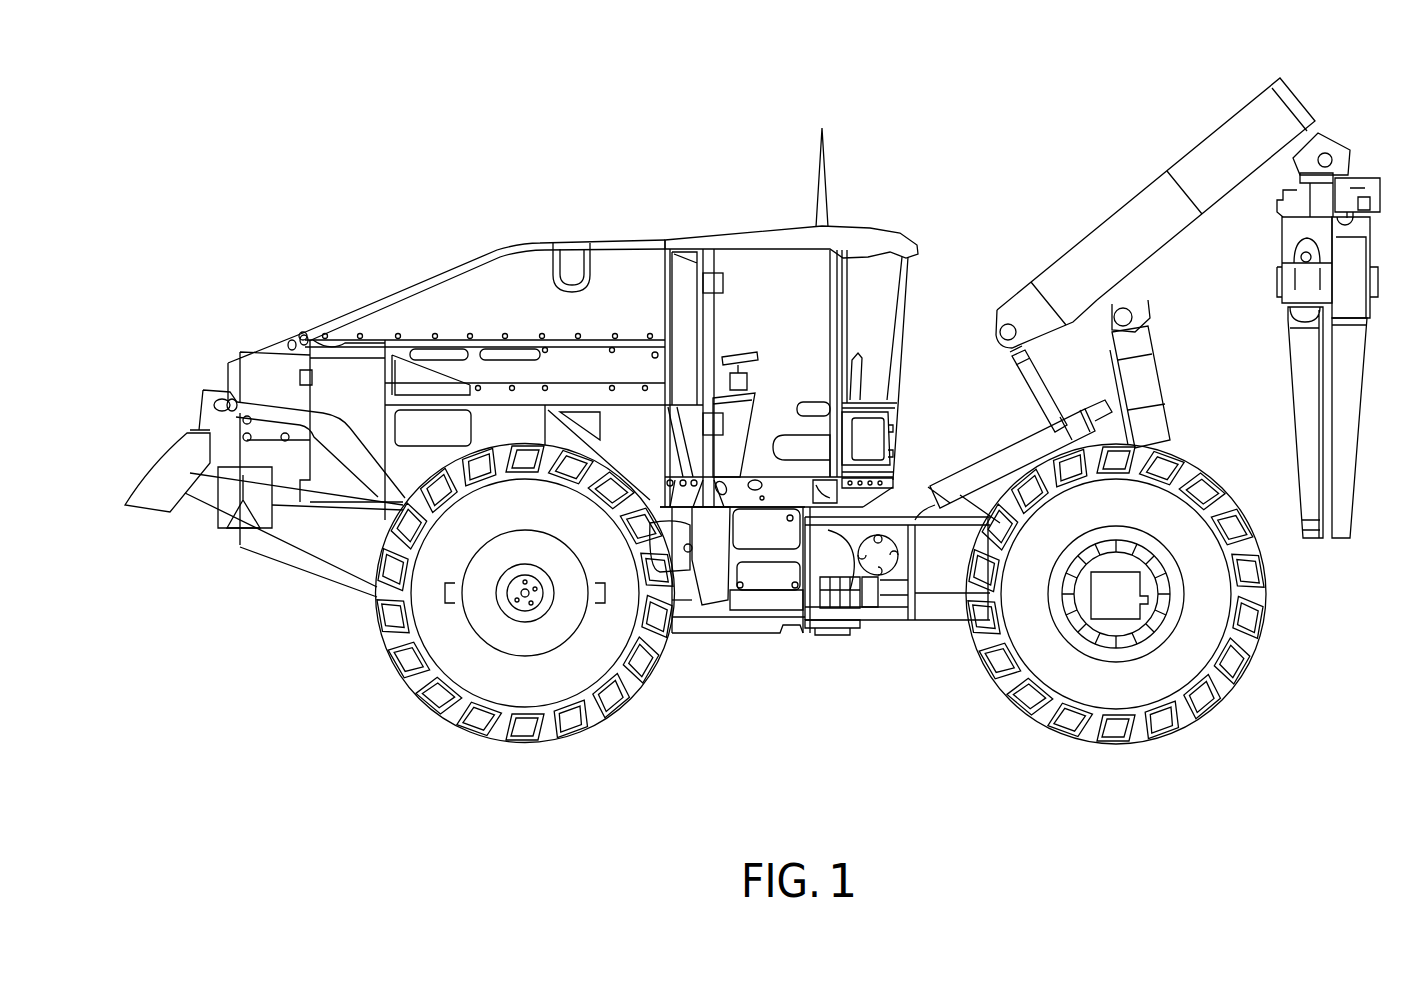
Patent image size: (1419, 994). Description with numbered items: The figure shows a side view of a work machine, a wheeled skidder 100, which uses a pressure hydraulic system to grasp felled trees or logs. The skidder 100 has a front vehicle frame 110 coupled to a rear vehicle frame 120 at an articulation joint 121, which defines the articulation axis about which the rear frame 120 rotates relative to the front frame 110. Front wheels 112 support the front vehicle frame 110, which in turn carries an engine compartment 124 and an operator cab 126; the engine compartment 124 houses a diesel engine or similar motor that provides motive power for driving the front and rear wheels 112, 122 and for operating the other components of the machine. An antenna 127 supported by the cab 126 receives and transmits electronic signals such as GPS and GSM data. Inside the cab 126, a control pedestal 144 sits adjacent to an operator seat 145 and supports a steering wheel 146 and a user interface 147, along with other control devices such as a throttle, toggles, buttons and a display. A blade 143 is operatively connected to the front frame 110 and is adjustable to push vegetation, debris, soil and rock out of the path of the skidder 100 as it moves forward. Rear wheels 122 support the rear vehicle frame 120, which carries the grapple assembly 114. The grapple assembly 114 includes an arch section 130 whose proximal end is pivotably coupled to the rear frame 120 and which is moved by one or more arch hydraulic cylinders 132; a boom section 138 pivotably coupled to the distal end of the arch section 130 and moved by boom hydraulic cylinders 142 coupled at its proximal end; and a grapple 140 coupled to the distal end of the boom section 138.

The skidder 100 is at (535, 150).
The front vehicle frame 110 is at (773, 625).
The front wheels 112 is at (408, 685).
The grapple assembly 114 is at (1075, 130).
The rear vehicle frame 120 is at (938, 612).
The articulation joint 121 is at (852, 622).
The rear wheels 122 is at (1285, 627).
The engine compartment 124 is at (337, 290).
The operator cab 126 is at (762, 235).
The antenna 127 is at (832, 150).
The arch section 130 is at (1160, 408).
The arch hydraulic cylinders 132 is at (985, 470).
The boom section 138 is at (1098, 240).
The grapple 140 is at (1268, 318).
The boom hydraulic cylinders 142 is at (1030, 398).
The blade 143 is at (145, 485).
The control pedestal 144 is at (722, 455).
The operator seat 145 is at (850, 375).
The steering wheel 146 is at (752, 345).
The user interface 147 is at (745, 395).